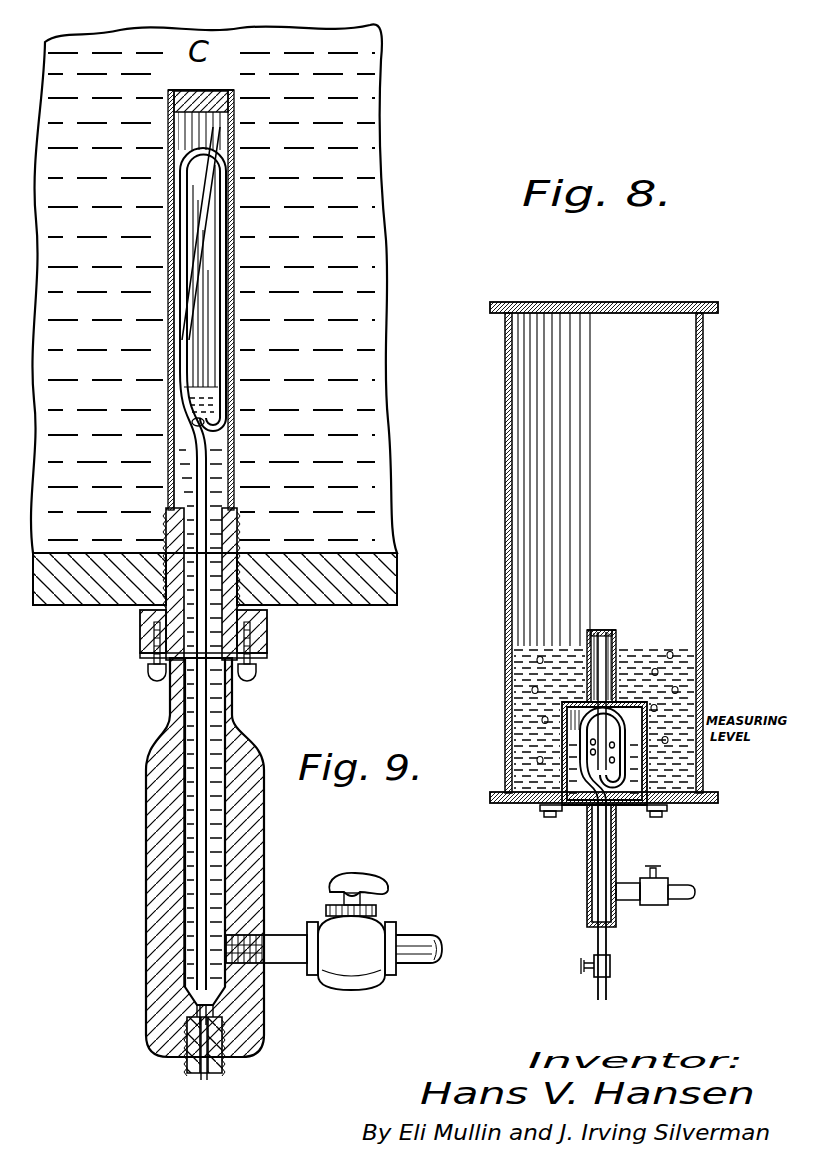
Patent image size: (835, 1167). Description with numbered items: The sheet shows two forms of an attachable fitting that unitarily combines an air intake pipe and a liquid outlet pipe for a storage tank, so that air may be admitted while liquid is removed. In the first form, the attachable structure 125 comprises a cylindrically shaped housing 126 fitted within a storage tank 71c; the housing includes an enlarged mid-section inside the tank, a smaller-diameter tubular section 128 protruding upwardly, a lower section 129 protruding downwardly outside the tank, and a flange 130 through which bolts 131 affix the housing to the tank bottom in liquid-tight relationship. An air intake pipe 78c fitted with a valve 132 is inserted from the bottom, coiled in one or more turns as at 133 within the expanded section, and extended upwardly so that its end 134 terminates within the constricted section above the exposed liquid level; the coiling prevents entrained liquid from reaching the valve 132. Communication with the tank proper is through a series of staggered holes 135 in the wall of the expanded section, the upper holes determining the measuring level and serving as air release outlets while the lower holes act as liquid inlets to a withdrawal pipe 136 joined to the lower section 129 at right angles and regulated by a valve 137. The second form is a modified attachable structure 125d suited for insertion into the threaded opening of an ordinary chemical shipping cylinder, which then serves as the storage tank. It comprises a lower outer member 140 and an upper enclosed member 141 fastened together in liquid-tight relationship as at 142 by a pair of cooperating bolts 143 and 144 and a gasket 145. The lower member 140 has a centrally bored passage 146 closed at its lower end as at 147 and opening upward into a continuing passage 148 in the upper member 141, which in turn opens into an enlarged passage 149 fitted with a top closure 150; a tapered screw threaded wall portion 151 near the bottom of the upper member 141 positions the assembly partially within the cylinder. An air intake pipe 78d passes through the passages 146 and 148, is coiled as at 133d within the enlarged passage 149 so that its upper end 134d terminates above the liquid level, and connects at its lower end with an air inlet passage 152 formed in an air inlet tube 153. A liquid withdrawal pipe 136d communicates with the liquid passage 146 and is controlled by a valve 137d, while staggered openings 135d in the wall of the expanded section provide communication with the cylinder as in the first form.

In FIG. 9, the top closure 150 is at (215, 90).
In FIG. 9, the upper end of air intake pipe 134d is at (225, 116).
In FIG. 9, the coiled turns of air intake pipe 133d is at (223, 259).
In FIG. 9, the enlarged passage 149 is at (215, 298).
In FIG. 9, the staggered openings 135d is at (205, 425).
In FIG. 9, the air intake pipe 78d is at (210, 497).
In FIG. 9, the upper enclosed member 141 is at (170, 300).
In FIG. 9, the tapered screw threaded wall portion 151 is at (235, 548).
In FIG. 9, the continuing passage 148 is at (268, 618).
In FIG. 9, the liquid-tight joint 142 is at (268, 656).
In FIG. 9, the gasket 145 is at (150, 658).
In FIG. 9, the bolt 144 is at (155, 672).
In FIG. 9, the bolt 143 is at (252, 673).
In FIG. 9, the modified attachable structure 125d is at (160, 693).
In FIG. 9, the lower outer member 140 is at (146, 882).
In FIG. 9, the centrally bored passage 146 is at (225, 848).
In FIG. 9, the closed lower end of bored passage 147 is at (198, 1003).
In FIG. 9, the air inlet tube 153 is at (225, 1065).
In FIG. 9, the air inlet passage 152 is at (206, 1080).
In FIG. 9, the valve 137d is at (376, 900).
In FIG. 9, the liquid withdrawal pipe 136d is at (425, 934).
In FIG. 8, the storage tank 71c is at (702, 420).
In FIG. 8, the tubular section 128 is at (617, 640).
In FIG. 8, the end of air intake pipe 134 is at (605, 630).
In FIG. 8, the cylindrically shaped housing 126 is at (647, 782).
In FIG. 8, the coiled turns of air intake pipe 133 is at (578, 720).
In FIG. 8, the staggered holes 135 is at (578, 760).
In FIG. 8, the bolts 131 is at (665, 806).
In FIG. 8, the flange 130 is at (658, 816).
In FIG. 8, the attachable structure 125 is at (580, 820).
In FIG. 8, the lower section 129 is at (616, 840).
In FIG. 8, the air intake pipe 78c is at (598, 937).
In FIG. 8, the valve 132 is at (588, 972).
In FIG. 8, the valve 137 is at (660, 880).
In FIG. 8, the withdrawal pipe 136 is at (695, 892).